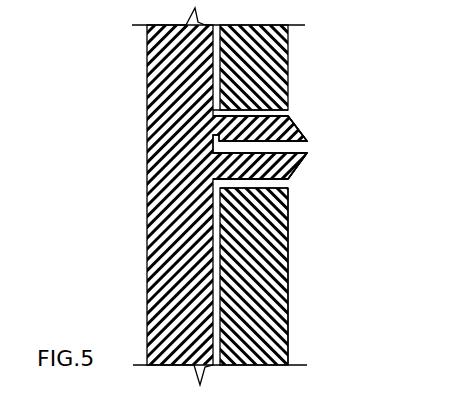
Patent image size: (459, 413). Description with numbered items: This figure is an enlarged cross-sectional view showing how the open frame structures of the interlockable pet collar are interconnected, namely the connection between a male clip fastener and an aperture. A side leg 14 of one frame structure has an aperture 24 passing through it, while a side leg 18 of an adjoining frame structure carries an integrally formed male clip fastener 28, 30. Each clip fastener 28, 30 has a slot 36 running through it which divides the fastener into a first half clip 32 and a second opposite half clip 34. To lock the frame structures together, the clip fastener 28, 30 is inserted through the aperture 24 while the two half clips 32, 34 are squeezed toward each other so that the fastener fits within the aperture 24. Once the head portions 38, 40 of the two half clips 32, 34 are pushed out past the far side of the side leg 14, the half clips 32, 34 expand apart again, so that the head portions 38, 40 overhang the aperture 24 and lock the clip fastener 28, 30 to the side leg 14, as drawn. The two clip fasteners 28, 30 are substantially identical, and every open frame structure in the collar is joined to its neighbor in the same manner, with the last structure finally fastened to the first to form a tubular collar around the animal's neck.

The side leg 14 is at (288, 42).
The side leg 18 is at (165, 133).
The aperture 24 is at (237, 188).
The male clip fastener 28 is at (303, 198).
The male clip fastener 30 is at (341, 187).
The first half clip 32 is at (287, 73).
The second opposite half clip 34 is at (289, 227).
The slot 36 is at (293, 145).
The head portion 38 is at (258, 115).
The head portion 40 is at (298, 164).